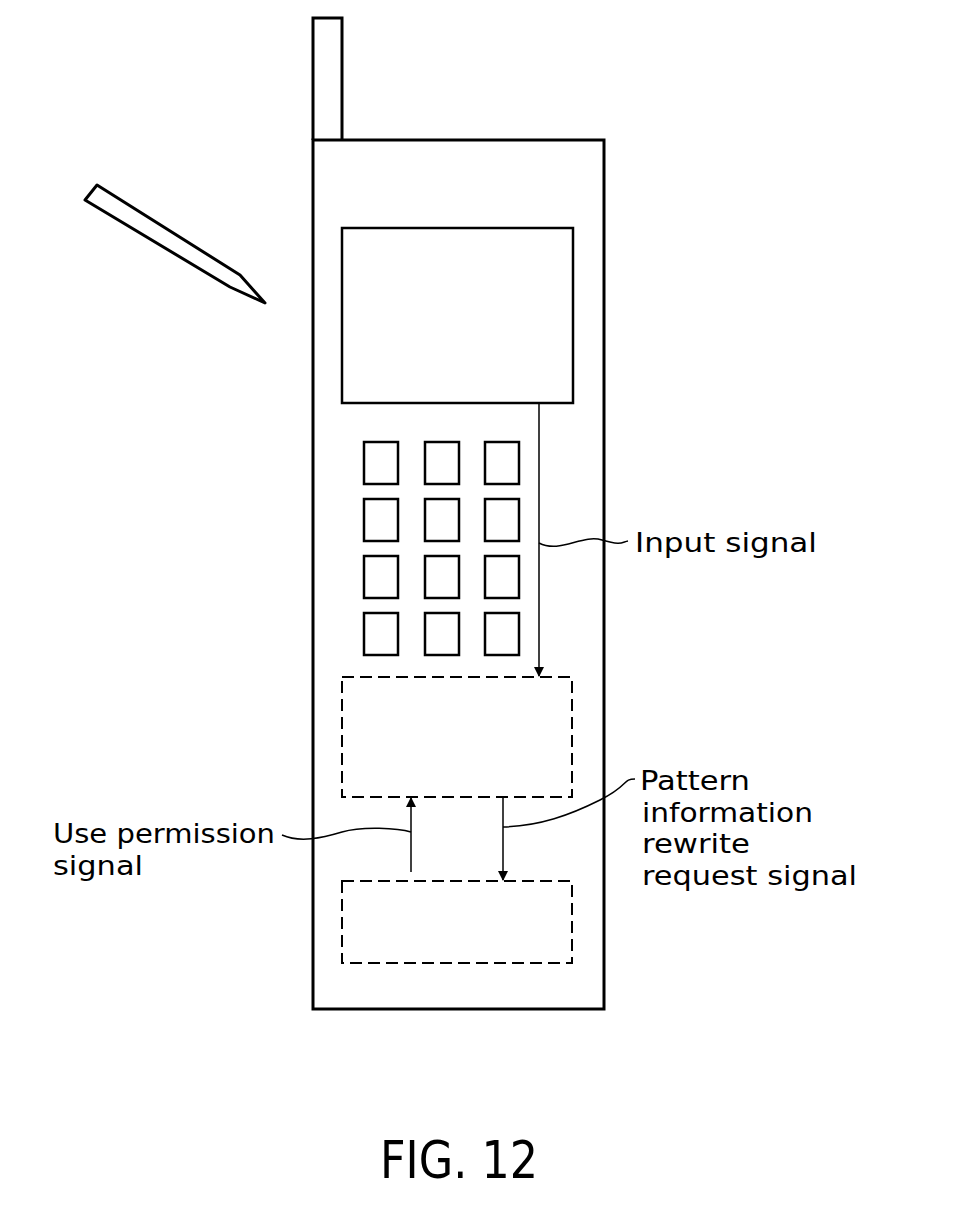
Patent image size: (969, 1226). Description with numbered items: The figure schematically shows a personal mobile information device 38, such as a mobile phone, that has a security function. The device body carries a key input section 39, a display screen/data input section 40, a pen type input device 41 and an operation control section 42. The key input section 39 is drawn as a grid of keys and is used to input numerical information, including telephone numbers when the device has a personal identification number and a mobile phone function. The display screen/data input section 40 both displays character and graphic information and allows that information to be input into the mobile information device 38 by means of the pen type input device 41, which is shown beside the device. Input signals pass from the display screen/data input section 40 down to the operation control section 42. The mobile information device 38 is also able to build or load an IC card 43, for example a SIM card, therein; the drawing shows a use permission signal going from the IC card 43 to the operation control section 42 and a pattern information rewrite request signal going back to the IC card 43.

The mobile information device 38 is at (583, 140).
The key input section 39 is at (355, 460).
The display screen/data input section 40 is at (573, 300).
The pen type input device 41 is at (112, 187).
The operation control section 42 is at (572, 710).
The IC card 43 is at (572, 928).